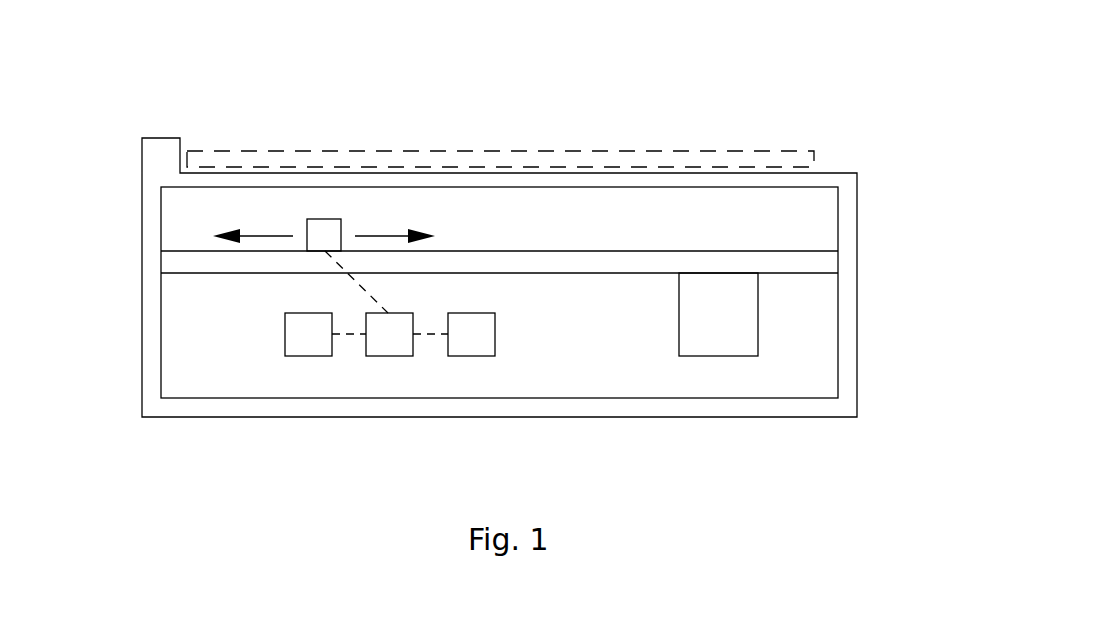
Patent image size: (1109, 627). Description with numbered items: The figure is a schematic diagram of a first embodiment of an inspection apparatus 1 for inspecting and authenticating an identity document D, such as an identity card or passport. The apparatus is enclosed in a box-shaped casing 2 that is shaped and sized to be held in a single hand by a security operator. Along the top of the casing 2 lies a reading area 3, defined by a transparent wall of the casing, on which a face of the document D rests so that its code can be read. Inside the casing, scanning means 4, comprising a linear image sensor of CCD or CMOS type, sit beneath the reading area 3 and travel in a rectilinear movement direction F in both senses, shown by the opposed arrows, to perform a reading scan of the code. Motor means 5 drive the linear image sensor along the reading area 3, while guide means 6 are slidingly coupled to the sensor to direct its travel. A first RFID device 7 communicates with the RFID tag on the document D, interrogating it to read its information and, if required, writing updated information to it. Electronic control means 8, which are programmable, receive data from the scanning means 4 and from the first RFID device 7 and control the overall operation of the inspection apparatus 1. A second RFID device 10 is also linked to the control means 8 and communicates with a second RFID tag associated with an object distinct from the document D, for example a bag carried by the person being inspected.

The inspection apparatus 1 is at (800, 72).
The casing 2 is at (153, 309).
The reading area 3 is at (530, 150).
The scanning means 4 is at (327, 228).
The motor means 5 is at (717, 345).
The guide means 6 is at (600, 262).
The first RFID device 7 is at (480, 348).
The electronic control means 8 is at (398, 348).
The second RFID device 10 is at (323, 348).
The document D is at (468, 155).
The movement direction F is at (385, 234).